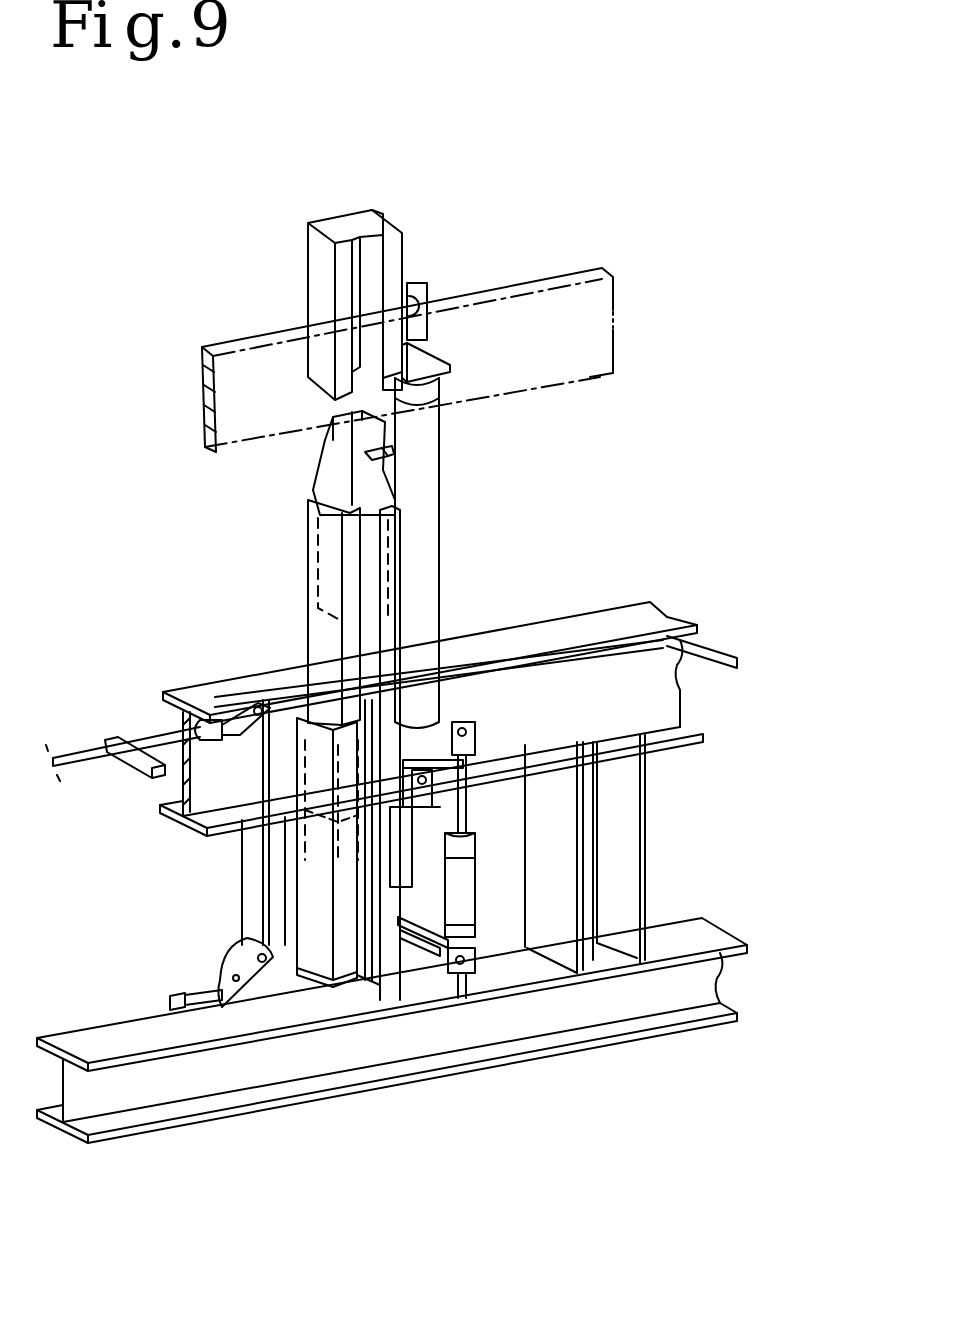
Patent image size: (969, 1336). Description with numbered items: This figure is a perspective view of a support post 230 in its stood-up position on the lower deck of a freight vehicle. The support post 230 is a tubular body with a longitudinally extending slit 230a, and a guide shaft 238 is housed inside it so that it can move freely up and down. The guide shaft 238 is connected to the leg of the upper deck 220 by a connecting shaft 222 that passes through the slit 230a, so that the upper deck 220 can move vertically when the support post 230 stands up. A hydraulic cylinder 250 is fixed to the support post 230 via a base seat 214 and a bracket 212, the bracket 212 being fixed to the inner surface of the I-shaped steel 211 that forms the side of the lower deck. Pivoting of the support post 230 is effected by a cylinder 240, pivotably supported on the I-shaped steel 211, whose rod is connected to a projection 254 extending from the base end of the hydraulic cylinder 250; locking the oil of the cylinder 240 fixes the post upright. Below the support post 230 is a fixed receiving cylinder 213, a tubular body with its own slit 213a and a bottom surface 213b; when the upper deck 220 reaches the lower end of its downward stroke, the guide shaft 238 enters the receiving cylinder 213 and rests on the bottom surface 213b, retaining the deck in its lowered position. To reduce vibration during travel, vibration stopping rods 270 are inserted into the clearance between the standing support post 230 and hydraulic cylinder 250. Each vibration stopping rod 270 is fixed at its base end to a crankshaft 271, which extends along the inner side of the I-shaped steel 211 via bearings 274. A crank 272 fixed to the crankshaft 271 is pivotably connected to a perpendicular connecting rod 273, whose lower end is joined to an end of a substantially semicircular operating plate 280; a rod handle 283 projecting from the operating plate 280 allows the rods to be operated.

The I-shaped steel 211 is at (667, 617).
The bracket 212 is at (477, 797).
The receiving cylinder 213 is at (320, 895).
The slit 213a is at (362, 903).
The bottom surface 213b is at (365, 958).
The base seat 214 is at (440, 680).
The upper deck 220 is at (595, 330).
The connecting shaft 222 is at (390, 465).
The support post 230 is at (390, 230).
The slit 230a is at (305, 705).
The guide shaft 238 is at (340, 463).
The cylinder 240 is at (467, 892).
The hydraulic cylinder 250 is at (425, 527).
The projection 254 is at (478, 718).
The vibration stopping rod 270 is at (732, 658).
The crankshaft 271 is at (607, 645).
The crank 272 is at (262, 700).
The connecting rod 273 is at (263, 770).
The bearing 274 is at (205, 718).
The operating plate 280 is at (232, 948).
The rod handle 283 is at (195, 1000).